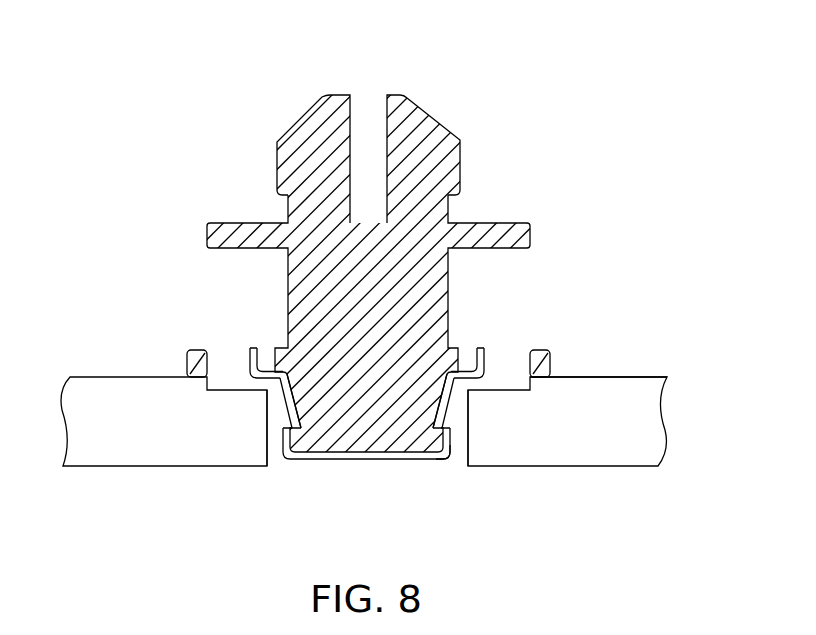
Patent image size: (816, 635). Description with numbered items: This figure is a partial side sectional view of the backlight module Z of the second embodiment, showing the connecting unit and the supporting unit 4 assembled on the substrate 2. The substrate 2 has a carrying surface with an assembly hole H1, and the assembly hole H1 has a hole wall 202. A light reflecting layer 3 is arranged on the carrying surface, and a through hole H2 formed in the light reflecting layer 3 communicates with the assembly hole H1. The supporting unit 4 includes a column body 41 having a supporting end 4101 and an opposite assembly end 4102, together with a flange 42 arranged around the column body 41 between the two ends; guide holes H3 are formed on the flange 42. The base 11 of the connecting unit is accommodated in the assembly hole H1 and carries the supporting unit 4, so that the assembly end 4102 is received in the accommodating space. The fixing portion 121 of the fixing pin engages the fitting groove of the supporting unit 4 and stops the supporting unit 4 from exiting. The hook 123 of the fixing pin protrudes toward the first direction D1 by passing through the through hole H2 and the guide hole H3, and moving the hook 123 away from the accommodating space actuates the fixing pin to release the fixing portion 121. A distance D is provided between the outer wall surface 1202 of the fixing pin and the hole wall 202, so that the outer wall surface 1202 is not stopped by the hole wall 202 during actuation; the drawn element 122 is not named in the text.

The substrate 2 is at (603, 445).
The light reflecting layer 3 is at (635, 384).
The supporting unit 4 is at (250, 116).
The base 11 is at (327, 460).
The column body 41 is at (448, 293).
The flange 42 is at (552, 366).
The fixing portion 121 is at (283, 405).
The second inclined side wall 122 is at (466, 393).
The hook 123 is at (481, 349).
The hole wall 202 is at (267, 443).
The outer wall surface 1202 is at (455, 456).
The supporting end 4101 is at (460, 158).
The assembly end 4102 is at (383, 442).
The gap distance D is at (490, 435).
The first direction D1 is at (597, 118).
The assembly hole H1 is at (465, 468).
The through hole H2 is at (510, 378).
The guide hole H3 is at (222, 358).
The backlight module Z is at (137, 80).